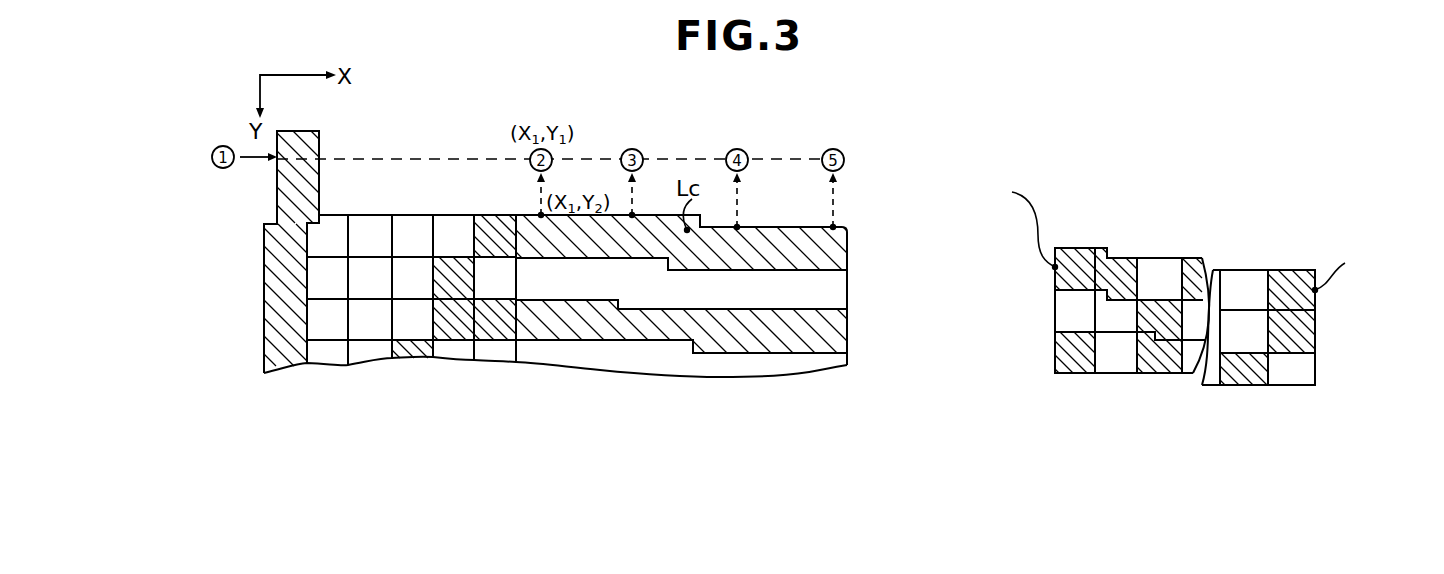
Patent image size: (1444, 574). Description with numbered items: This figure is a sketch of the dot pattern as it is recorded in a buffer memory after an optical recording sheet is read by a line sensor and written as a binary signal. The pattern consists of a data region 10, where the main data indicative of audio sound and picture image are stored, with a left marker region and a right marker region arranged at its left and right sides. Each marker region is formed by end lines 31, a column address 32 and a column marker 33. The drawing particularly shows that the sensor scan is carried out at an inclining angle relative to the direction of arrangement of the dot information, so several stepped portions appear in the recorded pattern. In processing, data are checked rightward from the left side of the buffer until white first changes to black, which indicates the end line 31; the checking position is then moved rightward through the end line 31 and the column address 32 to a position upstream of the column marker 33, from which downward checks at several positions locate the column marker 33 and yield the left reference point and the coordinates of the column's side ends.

The data region 10 is at (1303, 141).
The end line 31 is at (264, 272).
The column address 32 is at (513, 204).
The column marker 33 is at (847, 243).